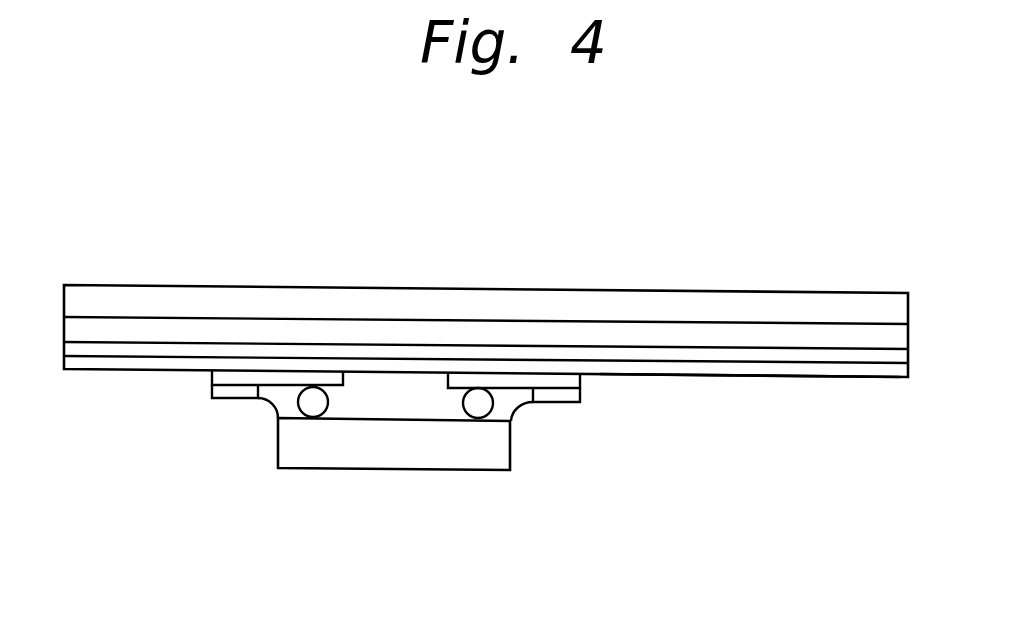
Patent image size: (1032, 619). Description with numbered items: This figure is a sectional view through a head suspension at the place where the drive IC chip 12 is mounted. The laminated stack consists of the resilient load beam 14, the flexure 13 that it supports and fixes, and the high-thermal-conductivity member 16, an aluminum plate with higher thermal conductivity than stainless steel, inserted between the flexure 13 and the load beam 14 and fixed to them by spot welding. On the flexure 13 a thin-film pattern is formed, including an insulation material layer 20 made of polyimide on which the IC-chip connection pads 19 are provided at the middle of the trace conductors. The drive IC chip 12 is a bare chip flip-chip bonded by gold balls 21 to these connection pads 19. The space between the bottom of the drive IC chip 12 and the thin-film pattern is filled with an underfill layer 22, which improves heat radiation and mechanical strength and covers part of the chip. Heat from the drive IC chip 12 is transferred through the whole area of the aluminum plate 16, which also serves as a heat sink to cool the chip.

The drive IC chip 12 is at (460, 453).
The flexure 13 is at (838, 356).
The load beam 14 is at (733, 310).
The high-thermal-conductivity member 16 is at (807, 337).
The connection pads 19 is at (211, 381).
The insulation material layer 20 is at (725, 367).
The gold balls 21 is at (308, 403).
The underfill layer 22 is at (372, 403).